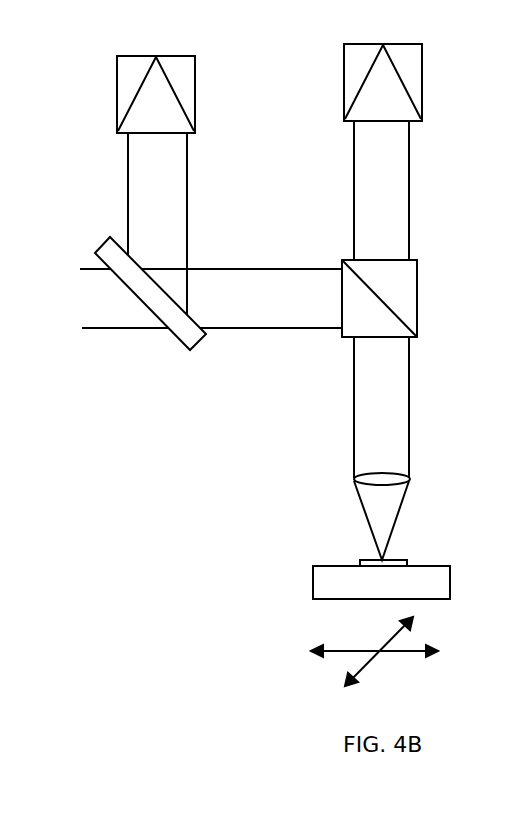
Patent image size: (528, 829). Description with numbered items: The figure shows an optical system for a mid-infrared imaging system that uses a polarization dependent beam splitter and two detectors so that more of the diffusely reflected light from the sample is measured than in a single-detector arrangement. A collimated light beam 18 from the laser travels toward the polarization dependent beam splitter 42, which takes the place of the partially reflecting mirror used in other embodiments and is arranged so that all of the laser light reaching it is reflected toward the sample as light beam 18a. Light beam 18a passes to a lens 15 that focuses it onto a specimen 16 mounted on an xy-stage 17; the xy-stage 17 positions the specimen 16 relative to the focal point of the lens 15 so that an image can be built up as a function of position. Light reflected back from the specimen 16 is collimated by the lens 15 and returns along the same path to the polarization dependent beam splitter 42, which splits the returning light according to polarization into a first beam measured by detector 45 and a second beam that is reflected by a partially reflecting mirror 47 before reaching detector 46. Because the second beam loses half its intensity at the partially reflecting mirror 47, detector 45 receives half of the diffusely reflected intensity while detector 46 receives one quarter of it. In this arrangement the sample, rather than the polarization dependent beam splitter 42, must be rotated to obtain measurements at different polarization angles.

The lens 15 is at (408, 484).
The specimen 16 is at (365, 560).
The xy-stage 17 is at (318, 577).
The collimated light beam 18 is at (278, 273).
The light beam 18a is at (360, 388).
The polarization dependent beam splitter 42 is at (417, 301).
The detector 45 is at (422, 83).
The detector 46 is at (195, 87).
The partially reflecting mirror 47 is at (185, 340).